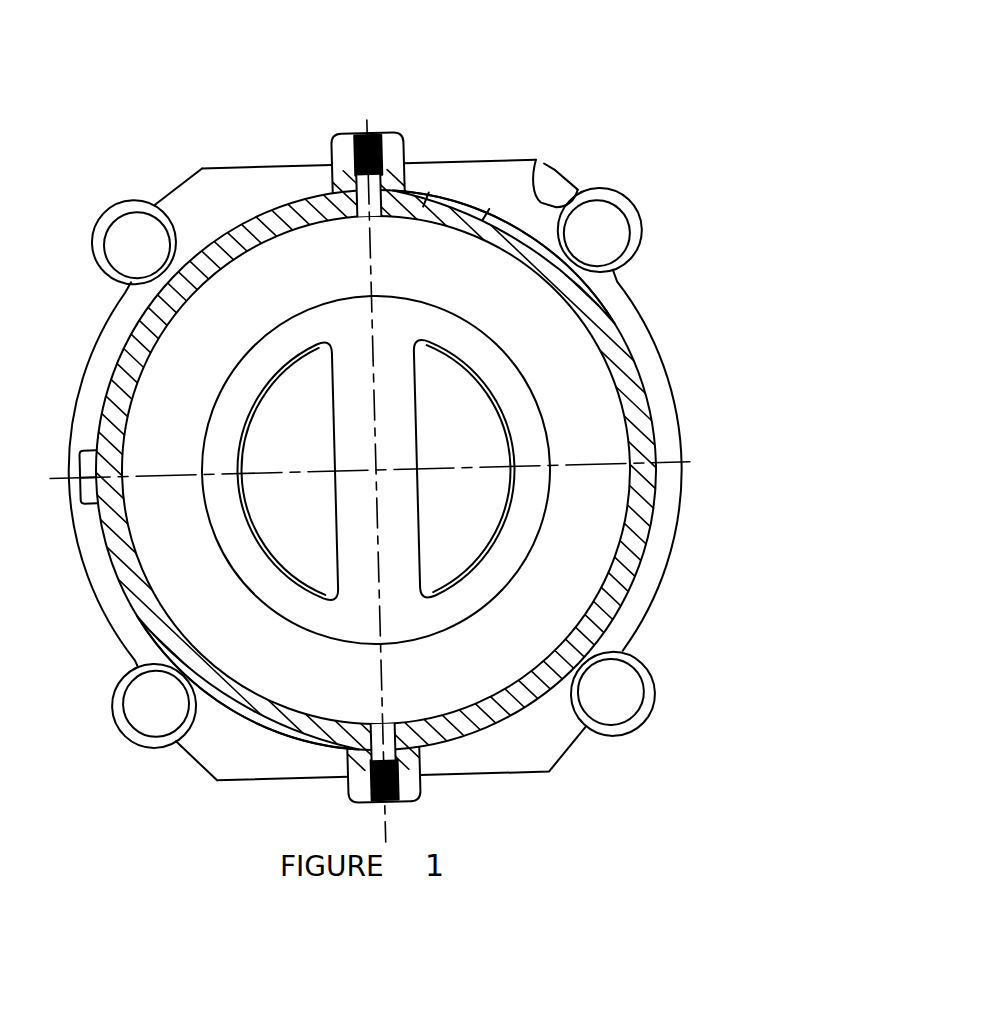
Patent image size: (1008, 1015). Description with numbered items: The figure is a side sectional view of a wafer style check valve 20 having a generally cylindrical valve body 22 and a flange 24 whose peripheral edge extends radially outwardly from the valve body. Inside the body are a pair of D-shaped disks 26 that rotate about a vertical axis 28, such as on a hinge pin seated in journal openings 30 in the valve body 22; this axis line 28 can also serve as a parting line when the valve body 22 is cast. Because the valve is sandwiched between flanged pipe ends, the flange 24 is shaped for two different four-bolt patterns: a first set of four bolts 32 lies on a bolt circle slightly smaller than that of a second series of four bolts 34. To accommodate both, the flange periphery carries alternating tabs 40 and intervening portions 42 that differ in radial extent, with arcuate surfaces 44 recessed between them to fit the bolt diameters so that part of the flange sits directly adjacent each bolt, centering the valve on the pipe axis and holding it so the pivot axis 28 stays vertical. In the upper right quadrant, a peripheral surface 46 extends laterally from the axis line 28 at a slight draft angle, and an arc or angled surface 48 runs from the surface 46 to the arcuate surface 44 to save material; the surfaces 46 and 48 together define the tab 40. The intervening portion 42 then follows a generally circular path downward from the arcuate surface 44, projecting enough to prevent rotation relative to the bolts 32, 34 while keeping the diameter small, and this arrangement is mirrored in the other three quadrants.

The wafer style check valve 20 is at (700, 390).
The valve body 22 is at (625, 593).
The flange 24 is at (688, 500).
The D-shaped disks 26 is at (297, 385).
The vertical axis 28 is at (372, 272).
The journal openings 30 is at (289, 468).
The first set of bolts 32 is at (617, 275).
The second series of bolts 34 is at (645, 225).
The tabs 40 is at (510, 188).
The intervening portions 42 is at (640, 338).
The arcuate surfaces 44 is at (540, 165).
The peripheral surface 46 is at (458, 163).
The angled surface 48 is at (555, 170).